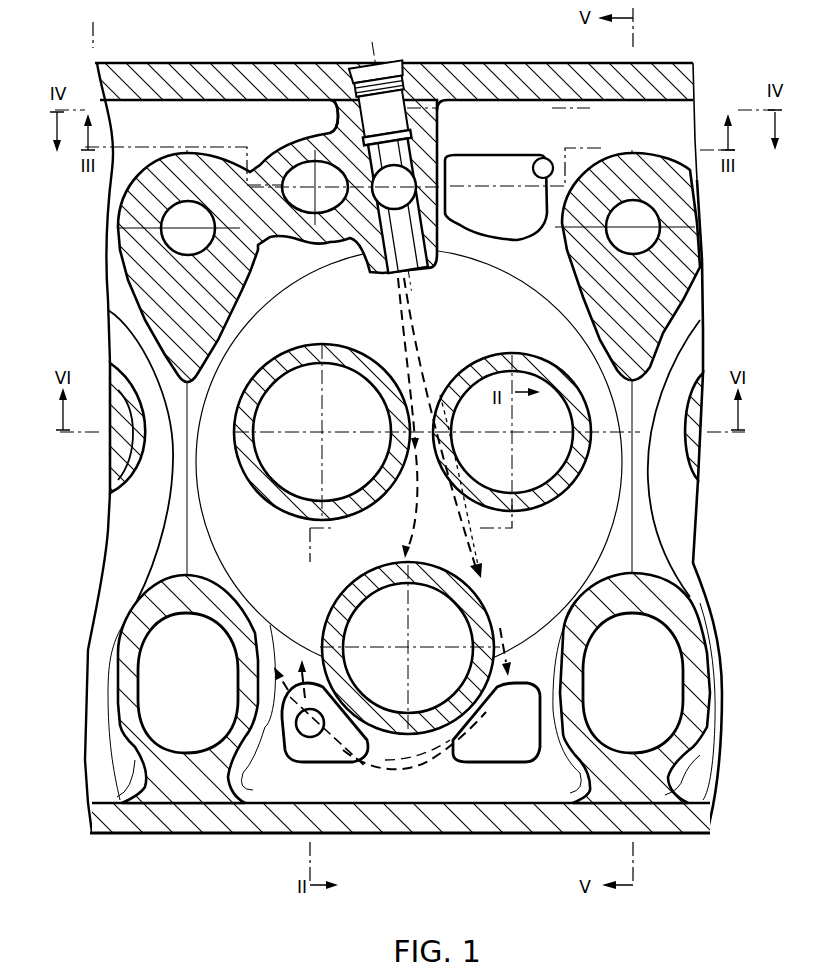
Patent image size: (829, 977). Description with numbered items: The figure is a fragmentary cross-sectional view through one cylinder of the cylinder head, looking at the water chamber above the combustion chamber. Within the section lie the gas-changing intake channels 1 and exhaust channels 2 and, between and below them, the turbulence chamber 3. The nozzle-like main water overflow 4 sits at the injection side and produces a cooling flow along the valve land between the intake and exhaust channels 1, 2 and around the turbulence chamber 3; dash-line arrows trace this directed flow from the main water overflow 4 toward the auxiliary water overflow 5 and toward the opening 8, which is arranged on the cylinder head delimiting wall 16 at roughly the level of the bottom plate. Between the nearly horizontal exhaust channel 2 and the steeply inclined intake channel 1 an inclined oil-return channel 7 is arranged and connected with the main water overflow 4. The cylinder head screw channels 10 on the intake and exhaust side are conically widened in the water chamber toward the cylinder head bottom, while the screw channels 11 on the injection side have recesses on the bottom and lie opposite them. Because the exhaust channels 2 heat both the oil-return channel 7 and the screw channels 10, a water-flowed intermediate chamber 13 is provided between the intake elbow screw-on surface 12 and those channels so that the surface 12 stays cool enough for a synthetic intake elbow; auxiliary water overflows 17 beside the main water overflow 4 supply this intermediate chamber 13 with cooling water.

The intake channel 1 is at (342, 375).
The exhaust channel 2 is at (500, 377).
The turbulence chamber 3 is at (465, 623).
The main water overflow 4 is at (412, 190).
The auxiliary water overflow 5 is at (303, 737).
The oil-return channel 7 is at (302, 203).
The opening 8 is at (373, 795).
The cylinder head screw channel 10 is at (203, 160).
The cylinder head screw channel 11 is at (142, 742).
The intake elbow screw-on surface 12 is at (280, 63).
The intermediate chamber 13 is at (312, 103).
The cylinder head delimiting wall 16 is at (497, 832).
The auxiliary water overflow 17 is at (540, 158).